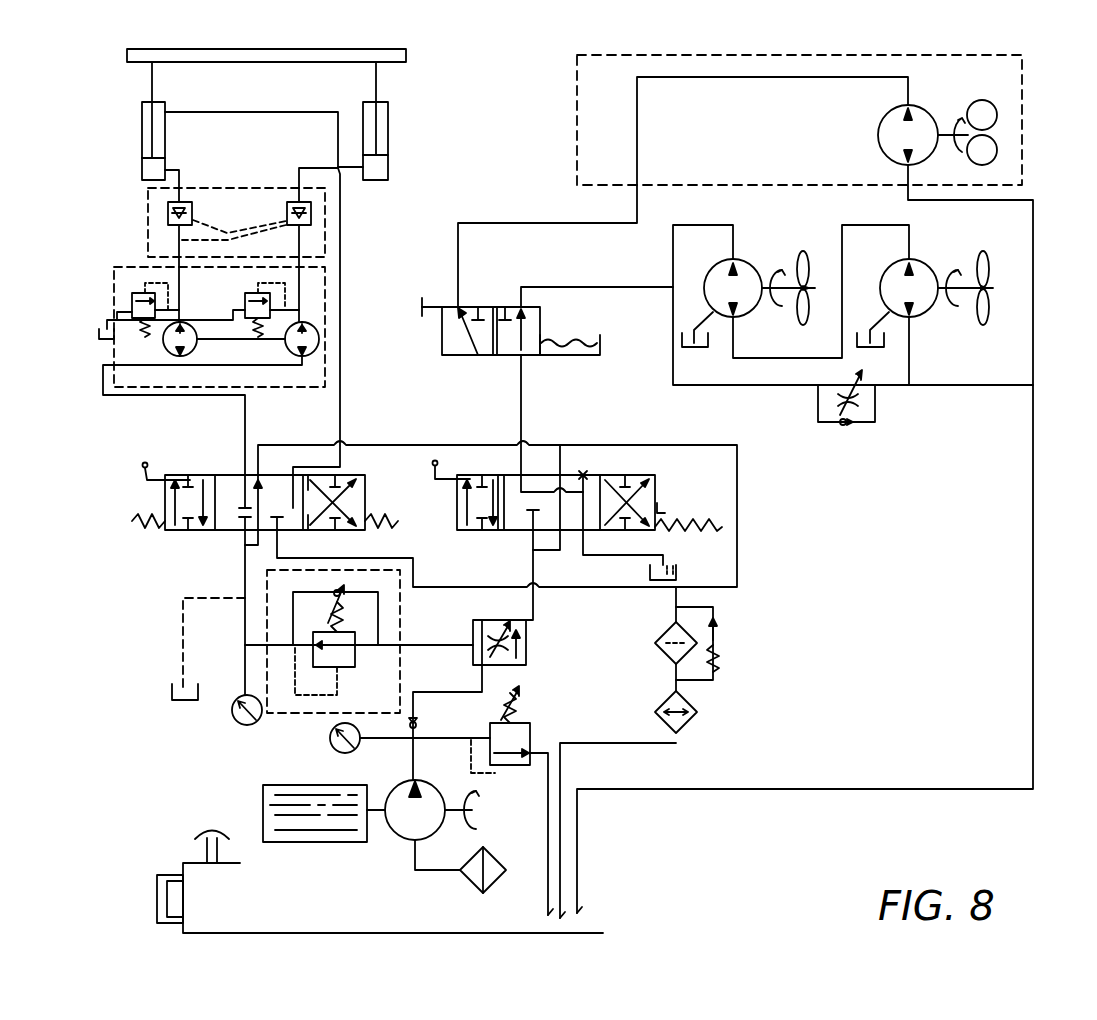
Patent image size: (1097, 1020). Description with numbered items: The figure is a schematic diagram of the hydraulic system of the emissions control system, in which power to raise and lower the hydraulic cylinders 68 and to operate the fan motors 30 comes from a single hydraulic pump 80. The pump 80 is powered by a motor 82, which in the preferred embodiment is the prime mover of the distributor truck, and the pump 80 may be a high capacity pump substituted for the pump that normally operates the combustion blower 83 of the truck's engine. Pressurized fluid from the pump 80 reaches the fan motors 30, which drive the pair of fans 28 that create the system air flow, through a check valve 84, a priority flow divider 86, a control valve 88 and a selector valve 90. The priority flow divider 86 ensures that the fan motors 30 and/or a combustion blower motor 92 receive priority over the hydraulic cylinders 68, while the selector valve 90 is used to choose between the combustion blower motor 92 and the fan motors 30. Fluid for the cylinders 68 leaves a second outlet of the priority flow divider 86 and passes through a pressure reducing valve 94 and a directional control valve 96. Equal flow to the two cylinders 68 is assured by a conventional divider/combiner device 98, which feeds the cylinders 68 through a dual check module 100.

The fans 28 is at (800, 322).
The hydraulic motors 30 is at (750, 262).
The hydraulic cylinders 68 is at (166, 152).
The hydraulic pump 80 is at (397, 838).
The motor 82 is at (300, 843).
The combustion blower 83 is at (998, 115).
The check valve 84 is at (417, 722).
The priority flow divider 86 is at (527, 650).
The control valve 88 is at (492, 531).
The selector valve 90 is at (470, 356).
The combustion blower motor 92 is at (925, 107).
The pressure reducing valve 94 is at (402, 636).
The directional control valve 96 is at (190, 531).
The divider/combiner device 98 is at (114, 298).
The dual check module 100 is at (147, 213).